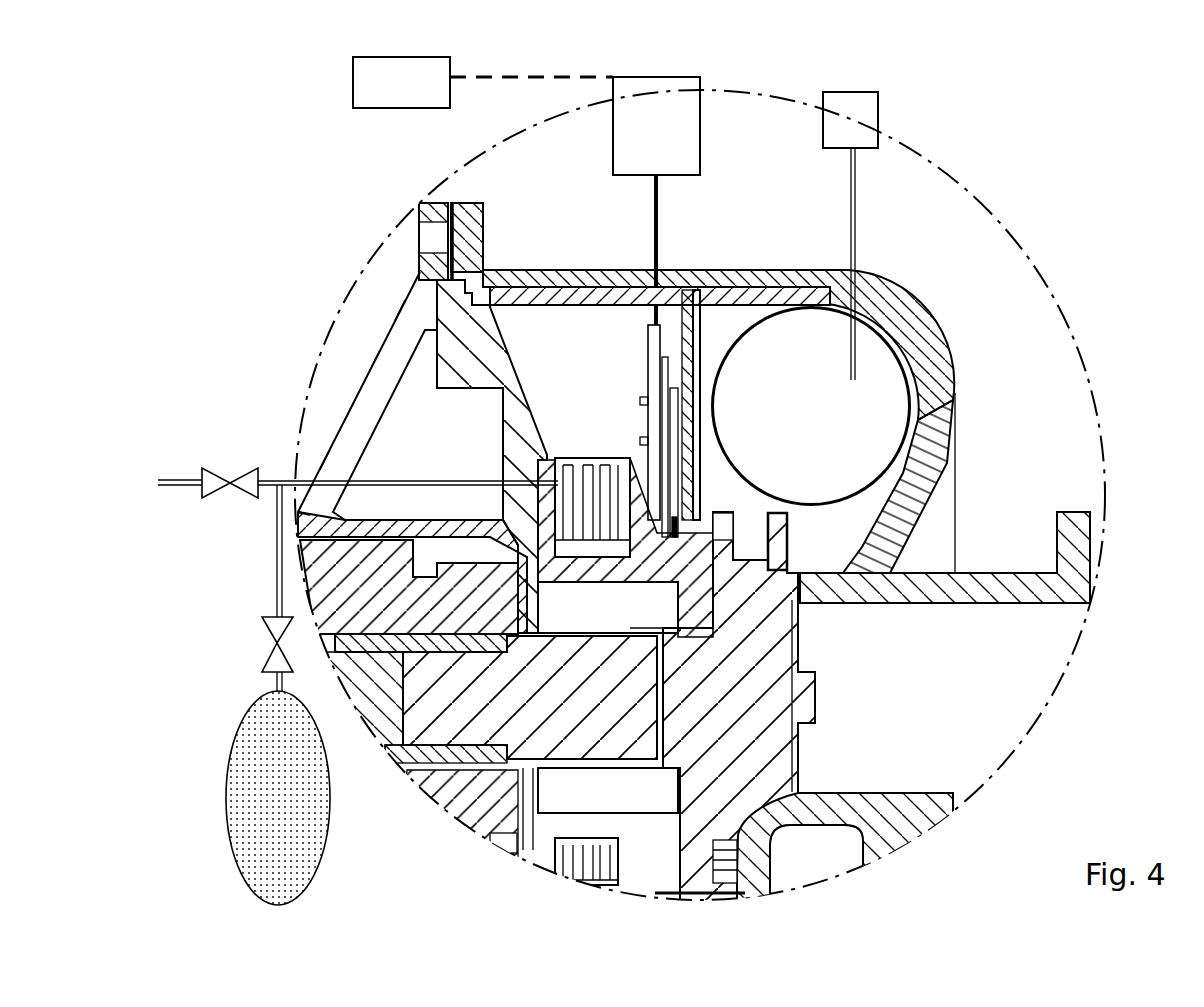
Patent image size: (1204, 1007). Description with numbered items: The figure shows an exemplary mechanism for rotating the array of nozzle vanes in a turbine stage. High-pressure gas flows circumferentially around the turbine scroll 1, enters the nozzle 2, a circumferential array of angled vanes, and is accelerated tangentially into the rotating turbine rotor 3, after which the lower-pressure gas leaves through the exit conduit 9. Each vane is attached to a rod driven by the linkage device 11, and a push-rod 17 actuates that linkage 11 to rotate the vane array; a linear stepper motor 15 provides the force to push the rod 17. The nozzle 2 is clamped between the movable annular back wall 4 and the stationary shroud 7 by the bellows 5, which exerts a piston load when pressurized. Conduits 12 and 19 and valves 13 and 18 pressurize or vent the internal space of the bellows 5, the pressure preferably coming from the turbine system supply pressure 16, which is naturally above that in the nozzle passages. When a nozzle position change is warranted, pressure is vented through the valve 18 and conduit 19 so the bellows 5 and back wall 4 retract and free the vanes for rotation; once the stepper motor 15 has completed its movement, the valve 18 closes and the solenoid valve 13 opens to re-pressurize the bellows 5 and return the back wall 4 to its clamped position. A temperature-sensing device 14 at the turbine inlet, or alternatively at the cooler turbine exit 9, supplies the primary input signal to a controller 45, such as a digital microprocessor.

The turbine scroll 1 is at (907, 418).
The nozzle 2 is at (728, 512).
The turbine rotor 3 is at (757, 658).
The back wall 4 is at (718, 510).
The bellows 5 is at (560, 458).
The stationary shroud 7 is at (816, 533).
The conduit 9 is at (770, 472).
The linkage device 11 is at (655, 375).
The conduit 12 is at (393, 481).
The solenoid valve 13 is at (273, 652).
The temperature-sensing device 14 is at (855, 188).
The linear stepper motor 15 is at (703, 137).
The supply pressure 16 is at (328, 903).
The push-rod 17 is at (660, 227).
The solenoid valve 18 is at (230, 483).
The conduit 19 is at (177, 483).
The controller 45 is at (352, 80).